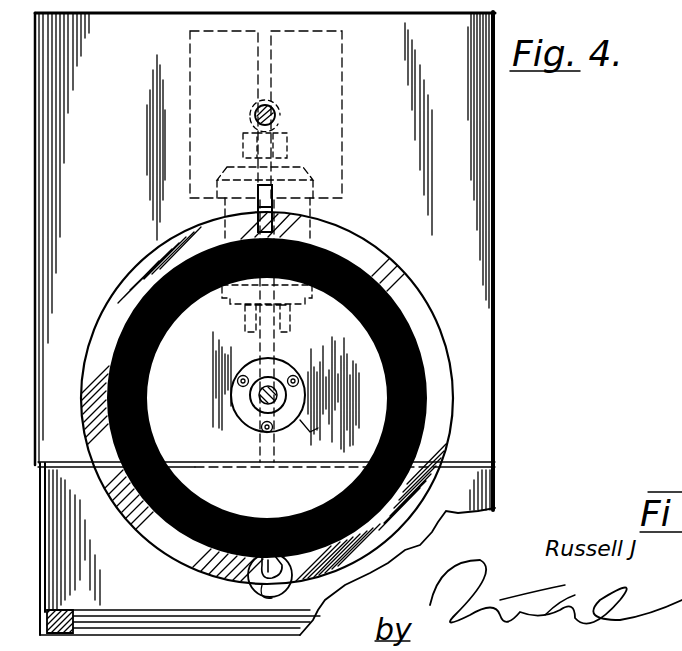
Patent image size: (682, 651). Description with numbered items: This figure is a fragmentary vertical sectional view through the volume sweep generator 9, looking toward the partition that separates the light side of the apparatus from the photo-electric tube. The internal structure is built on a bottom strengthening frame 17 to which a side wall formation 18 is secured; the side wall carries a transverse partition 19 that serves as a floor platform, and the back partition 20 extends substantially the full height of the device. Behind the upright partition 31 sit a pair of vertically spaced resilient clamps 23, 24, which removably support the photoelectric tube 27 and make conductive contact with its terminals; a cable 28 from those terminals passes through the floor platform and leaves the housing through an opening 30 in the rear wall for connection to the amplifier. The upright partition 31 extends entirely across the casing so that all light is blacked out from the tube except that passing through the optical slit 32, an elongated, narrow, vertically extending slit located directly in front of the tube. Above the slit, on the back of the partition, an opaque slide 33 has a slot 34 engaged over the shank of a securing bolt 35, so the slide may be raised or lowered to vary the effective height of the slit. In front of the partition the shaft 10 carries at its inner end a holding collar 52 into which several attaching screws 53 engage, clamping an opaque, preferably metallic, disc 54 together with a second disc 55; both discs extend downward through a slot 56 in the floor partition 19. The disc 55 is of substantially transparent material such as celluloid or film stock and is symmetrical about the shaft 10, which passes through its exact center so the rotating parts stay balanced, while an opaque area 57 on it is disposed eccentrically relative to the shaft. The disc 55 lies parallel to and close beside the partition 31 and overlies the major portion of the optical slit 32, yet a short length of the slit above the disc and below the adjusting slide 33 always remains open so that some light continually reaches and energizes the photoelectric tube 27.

The volume sweep generator 9 is at (500, 130).
The shaft 10 is at (262, 404).
The bottom strengthening frame 17 is at (68, 600).
The side wall formation 18 is at (47, 542).
The transverse partition 19 is at (495, 438).
The back partition 20 is at (433, 530).
The resilient clamp 23 is at (289, 145).
The resilient clamp 24 is at (235, 310).
The photoelectric tube 27 is at (228, 212).
The cable 28 is at (245, 545).
The opening 30 is at (262, 588).
The upright partition 31 is at (465, 249).
The optical slit 32 is at (280, 208).
The opaque slide 33 is at (338, 105).
The slot 34 is at (268, 72).
The securing bolt 35 is at (258, 110).
The holding collar 52 is at (254, 434).
The attaching screws 53 is at (240, 381).
The opaque disc 54 is at (286, 387).
The disc 55 is at (434, 334).
The slot 56 is at (460, 444).
The opaque area 57 is at (398, 303).